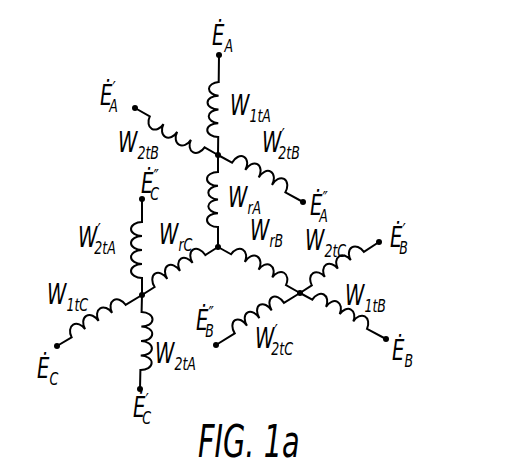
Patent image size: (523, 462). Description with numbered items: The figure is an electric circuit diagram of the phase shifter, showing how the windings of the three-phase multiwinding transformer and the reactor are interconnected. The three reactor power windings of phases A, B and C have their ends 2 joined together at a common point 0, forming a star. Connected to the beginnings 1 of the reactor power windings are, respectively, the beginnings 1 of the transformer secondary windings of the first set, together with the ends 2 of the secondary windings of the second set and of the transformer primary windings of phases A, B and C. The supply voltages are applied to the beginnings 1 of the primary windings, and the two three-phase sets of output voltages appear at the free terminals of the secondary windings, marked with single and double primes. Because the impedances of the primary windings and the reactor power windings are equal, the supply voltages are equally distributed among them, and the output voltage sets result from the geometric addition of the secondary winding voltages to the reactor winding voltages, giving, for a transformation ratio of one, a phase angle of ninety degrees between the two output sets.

The beginning 1 is at (219, 212).
The end 2 is at (248, 240).
The common point 0 is at (213, 261).